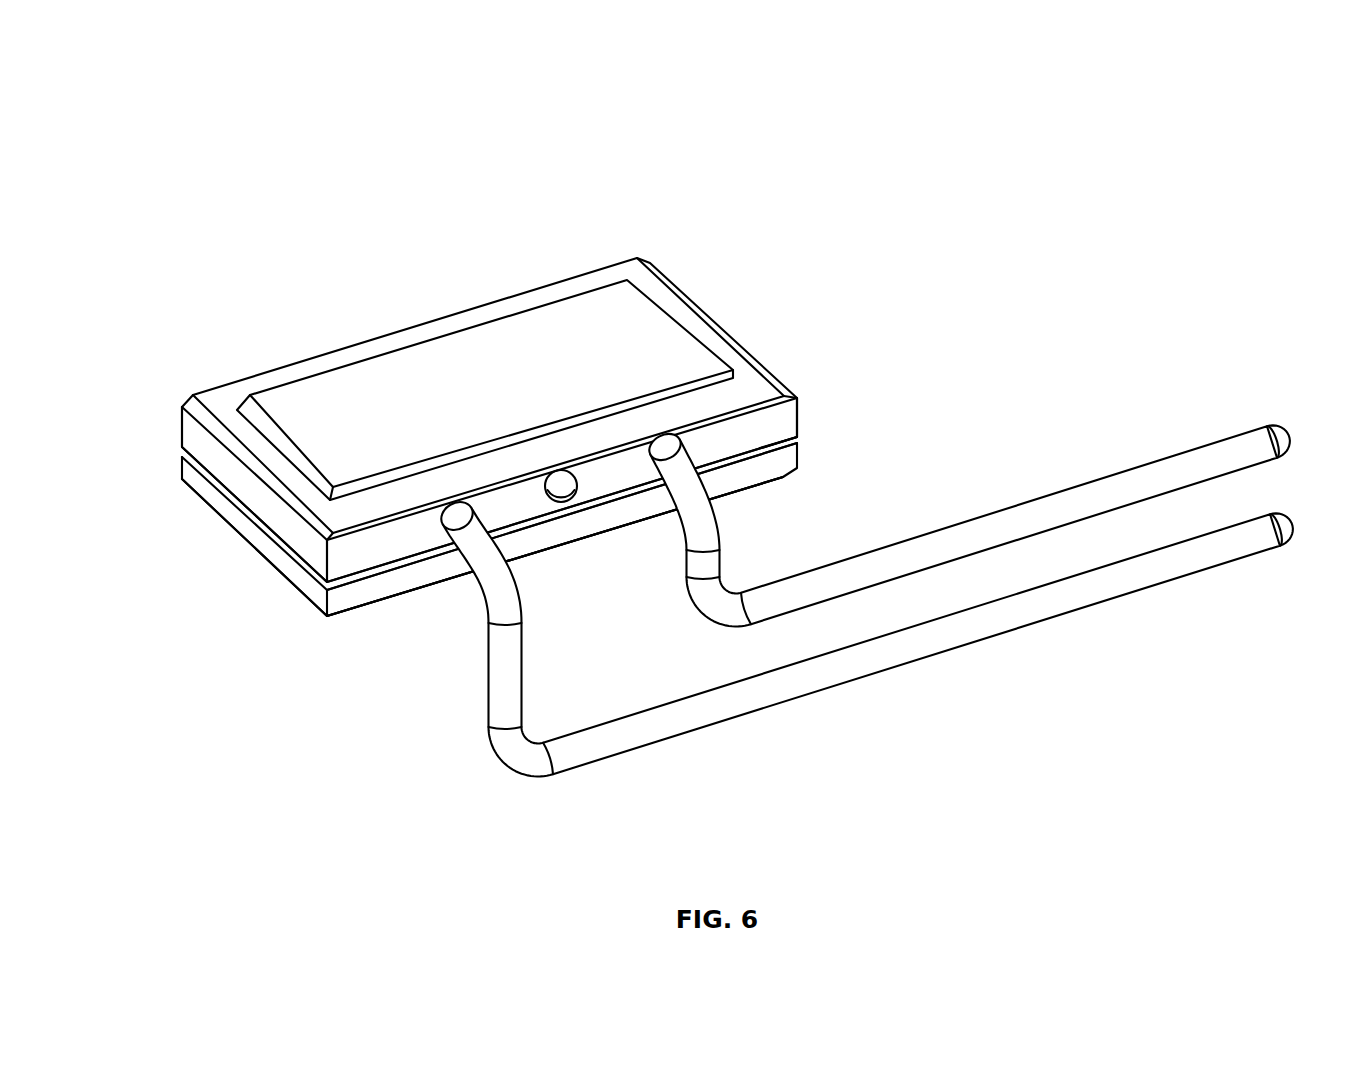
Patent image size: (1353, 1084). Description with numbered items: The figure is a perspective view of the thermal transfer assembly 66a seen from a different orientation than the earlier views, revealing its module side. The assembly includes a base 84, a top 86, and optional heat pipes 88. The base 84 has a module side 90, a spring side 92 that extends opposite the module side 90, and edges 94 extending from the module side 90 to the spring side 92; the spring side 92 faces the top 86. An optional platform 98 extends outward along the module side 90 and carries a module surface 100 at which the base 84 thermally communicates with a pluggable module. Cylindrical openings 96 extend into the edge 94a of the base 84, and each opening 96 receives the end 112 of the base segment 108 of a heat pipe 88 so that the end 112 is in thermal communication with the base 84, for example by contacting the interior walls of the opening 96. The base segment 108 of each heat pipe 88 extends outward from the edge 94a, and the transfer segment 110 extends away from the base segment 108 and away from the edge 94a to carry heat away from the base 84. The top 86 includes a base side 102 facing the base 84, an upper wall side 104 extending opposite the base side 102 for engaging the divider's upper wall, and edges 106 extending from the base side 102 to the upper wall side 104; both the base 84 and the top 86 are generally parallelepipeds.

The thermal transfer assembly 66a is at (696, 459).
The base 84 is at (640, 254).
The top 86 is at (327, 617).
The heat pipes 88 is at (1192, 448).
The module side 90 is at (288, 366).
The spring side 92 is at (407, 565).
The edges 94 is at (181, 428).
The edge 94a is at (765, 420).
The openings 96 is at (688, 437).
The platform 98 is at (438, 358).
The module surface 100 is at (523, 357).
The base side 102 is at (366, 570).
The upper wall side 104 is at (459, 586).
The edges 106 is at (181, 466).
The base segment 108 is at (684, 438).
The transfer segment 110 is at (486, 691).
The end 112 is at (447, 488).